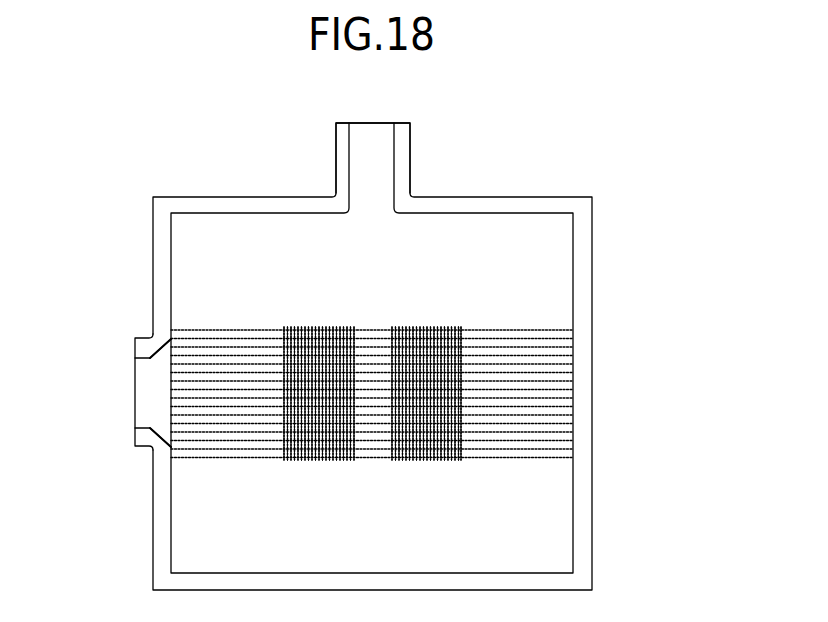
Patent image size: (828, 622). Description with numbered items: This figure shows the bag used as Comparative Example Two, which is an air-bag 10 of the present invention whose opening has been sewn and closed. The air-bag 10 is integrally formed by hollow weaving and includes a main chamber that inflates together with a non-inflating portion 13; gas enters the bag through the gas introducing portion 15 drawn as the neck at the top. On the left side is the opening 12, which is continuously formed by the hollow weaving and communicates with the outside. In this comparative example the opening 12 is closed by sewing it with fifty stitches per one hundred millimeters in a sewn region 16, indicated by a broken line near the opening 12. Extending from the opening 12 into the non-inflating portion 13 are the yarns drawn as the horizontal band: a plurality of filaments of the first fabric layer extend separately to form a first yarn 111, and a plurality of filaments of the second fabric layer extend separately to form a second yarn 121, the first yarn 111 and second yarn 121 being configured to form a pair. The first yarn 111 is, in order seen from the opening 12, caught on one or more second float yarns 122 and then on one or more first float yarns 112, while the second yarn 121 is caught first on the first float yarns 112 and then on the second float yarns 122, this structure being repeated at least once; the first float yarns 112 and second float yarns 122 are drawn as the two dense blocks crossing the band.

The air-bag 10 is at (490, 292).
The gas introducing portion 15 is at (372, 160).
The opening 12 is at (157, 395).
The sewn region 16 is at (168, 410).
The non-inflating portion 13 is at (573, 387).
The first yarn 111 is at (250, 387).
The second yarn 121 is at (348, 370).
The first float yarn 112 is at (370, 453).
The second float yarn 122 is at (445, 452).